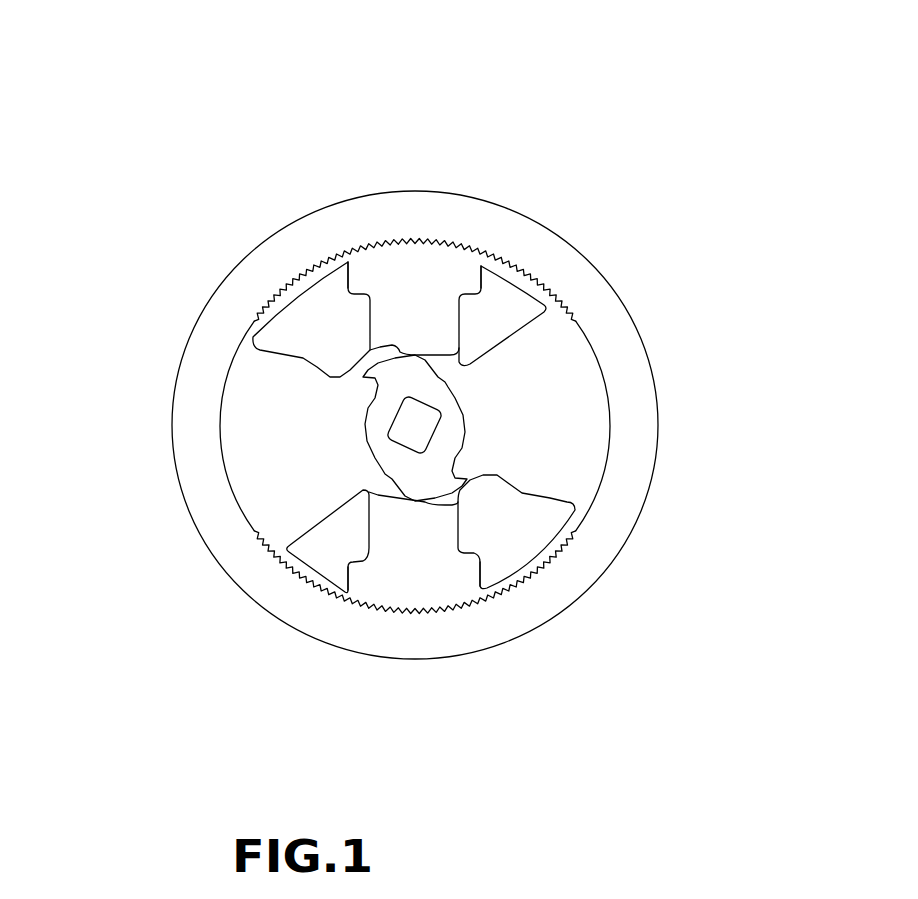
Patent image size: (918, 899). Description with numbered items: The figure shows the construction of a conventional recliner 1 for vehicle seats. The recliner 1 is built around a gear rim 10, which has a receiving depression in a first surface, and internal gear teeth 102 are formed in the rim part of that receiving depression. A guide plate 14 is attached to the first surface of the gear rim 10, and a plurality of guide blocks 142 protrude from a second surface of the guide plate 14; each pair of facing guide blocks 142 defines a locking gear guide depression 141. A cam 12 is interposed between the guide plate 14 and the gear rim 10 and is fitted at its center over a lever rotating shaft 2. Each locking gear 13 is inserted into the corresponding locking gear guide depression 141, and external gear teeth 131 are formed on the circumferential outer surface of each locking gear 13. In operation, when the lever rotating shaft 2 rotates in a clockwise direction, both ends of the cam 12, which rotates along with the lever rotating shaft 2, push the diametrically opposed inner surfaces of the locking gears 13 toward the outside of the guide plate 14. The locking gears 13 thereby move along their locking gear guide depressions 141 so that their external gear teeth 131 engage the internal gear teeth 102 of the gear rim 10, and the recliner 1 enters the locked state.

The conventional recliner 1 is at (219, 186).
The gear rim 10 is at (627, 368).
The internal gear teeth 102 is at (552, 305).
The cam 12 is at (370, 432).
The locking gear 13 is at (455, 263).
The external gear teeth 131 is at (410, 240).
The guide plate 14 is at (252, 385).
The locking gear guide depression 141 is at (357, 292).
The guide blocks 142 is at (512, 297).
The lever rotating shaft 2 is at (428, 425).